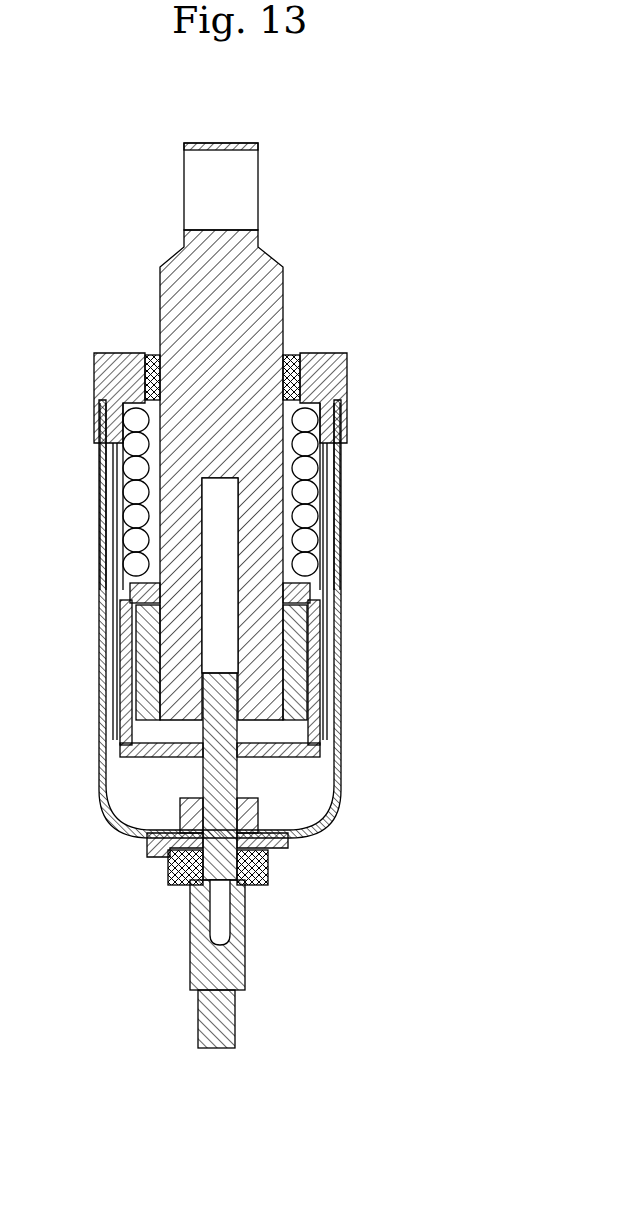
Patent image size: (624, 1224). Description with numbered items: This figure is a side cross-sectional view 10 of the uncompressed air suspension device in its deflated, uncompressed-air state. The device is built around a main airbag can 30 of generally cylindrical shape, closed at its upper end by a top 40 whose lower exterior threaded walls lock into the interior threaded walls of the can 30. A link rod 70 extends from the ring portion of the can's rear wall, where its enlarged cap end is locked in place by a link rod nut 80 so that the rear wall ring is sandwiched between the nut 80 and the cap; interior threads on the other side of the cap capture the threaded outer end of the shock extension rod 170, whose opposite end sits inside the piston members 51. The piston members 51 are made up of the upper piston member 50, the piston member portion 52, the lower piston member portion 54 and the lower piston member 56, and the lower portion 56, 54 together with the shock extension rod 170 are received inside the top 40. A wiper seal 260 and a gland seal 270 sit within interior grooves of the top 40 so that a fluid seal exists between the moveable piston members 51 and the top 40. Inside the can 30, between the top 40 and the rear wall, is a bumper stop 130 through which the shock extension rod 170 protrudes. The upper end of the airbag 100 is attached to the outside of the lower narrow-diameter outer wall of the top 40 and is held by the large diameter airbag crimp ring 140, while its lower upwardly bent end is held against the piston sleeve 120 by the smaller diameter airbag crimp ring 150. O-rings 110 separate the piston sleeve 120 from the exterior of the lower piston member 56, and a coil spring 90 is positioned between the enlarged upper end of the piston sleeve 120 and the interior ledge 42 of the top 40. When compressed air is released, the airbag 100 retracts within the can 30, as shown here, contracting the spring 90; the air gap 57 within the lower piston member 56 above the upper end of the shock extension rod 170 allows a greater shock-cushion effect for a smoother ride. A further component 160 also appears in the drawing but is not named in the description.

The side cross-sectional view 10 is at (387, 148).
The main airbag can 30 is at (345, 545).
The top 40 is at (115, 353).
The interior ledge 42 is at (340, 380).
The upper piston member 50 is at (250, 143).
The piston members 51 is at (143, 220).
The piston member portion 52 is at (283, 257).
The lower piston member portion 54 is at (273, 307).
The lower piston member 56 is at (283, 500).
The air gap 57 is at (213, 597).
The link rod 70 is at (243, 968).
The link rod nut 80 is at (268, 880).
The coil spring 90 is at (350, 404).
The airbag 100 is at (95, 533).
The O-rings 110 is at (100, 676).
The piston sleeve 120 is at (335, 595).
The bumper stop 130 is at (290, 836).
The large diameter airbag crimp ring 140 is at (340, 462).
The smaller diameter airbag crimp ring 150 is at (103, 628).
The cup 160 is at (345, 730).
The shock extension rod 170 is at (205, 767).
The wiper seal 260 is at (150, 355).
The gland seal 270 is at (315, 353).